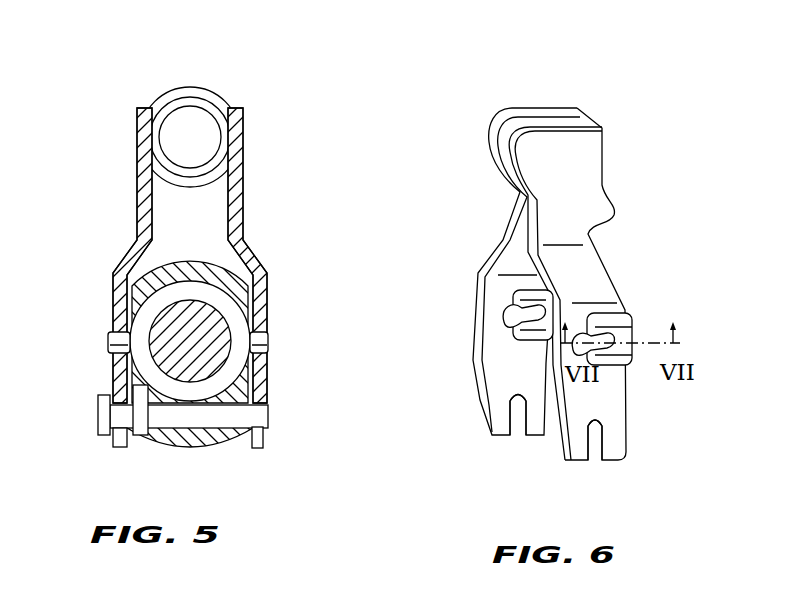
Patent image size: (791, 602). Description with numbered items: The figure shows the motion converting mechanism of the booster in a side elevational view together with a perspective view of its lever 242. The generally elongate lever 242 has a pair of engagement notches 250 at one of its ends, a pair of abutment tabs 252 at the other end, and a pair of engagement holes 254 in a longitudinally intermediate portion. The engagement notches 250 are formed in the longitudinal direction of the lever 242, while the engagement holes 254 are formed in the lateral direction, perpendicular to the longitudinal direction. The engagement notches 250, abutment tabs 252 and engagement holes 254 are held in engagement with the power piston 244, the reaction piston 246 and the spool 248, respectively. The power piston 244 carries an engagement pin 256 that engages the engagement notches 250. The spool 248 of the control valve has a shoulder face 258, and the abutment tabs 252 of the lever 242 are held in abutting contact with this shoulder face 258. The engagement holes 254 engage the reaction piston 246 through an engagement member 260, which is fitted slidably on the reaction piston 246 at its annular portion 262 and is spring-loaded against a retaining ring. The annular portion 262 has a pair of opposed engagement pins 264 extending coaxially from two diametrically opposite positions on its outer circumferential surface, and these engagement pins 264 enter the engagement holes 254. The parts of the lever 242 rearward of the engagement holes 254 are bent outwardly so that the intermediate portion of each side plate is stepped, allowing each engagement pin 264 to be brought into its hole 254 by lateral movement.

In FIG. 6, the lever 242 is at (628, 254).
In FIG. 5, the power piston 244 is at (237, 320).
In FIG. 5, the reaction piston 246 is at (210, 357).
In FIG. 5, the spool 248 is at (208, 70).
In FIG. 5, the engagement notches 250 is at (263, 440).
In FIG. 6, the engagement notches 250 is at (517, 437).
In FIG. 6, the abutment tabs 252 is at (499, 143).
In FIG. 5, the engagement holes 254 is at (112, 335).
In FIG. 6, the engagement holes 254 is at (503, 318).
In FIG. 5, the engagement pin 256 is at (240, 423).
In FIG. 5, the shoulder face 258 is at (220, 100).
In FIG. 5, the engagement member 260 is at (242, 291).
In FIG. 5, the annular portion 262 is at (240, 322).
In FIG. 5, the engagement pins 264 is at (110, 348).